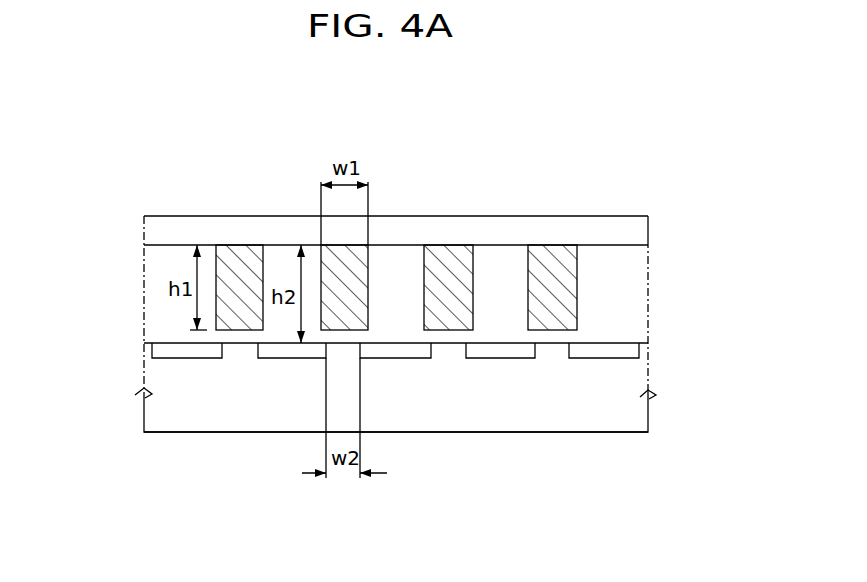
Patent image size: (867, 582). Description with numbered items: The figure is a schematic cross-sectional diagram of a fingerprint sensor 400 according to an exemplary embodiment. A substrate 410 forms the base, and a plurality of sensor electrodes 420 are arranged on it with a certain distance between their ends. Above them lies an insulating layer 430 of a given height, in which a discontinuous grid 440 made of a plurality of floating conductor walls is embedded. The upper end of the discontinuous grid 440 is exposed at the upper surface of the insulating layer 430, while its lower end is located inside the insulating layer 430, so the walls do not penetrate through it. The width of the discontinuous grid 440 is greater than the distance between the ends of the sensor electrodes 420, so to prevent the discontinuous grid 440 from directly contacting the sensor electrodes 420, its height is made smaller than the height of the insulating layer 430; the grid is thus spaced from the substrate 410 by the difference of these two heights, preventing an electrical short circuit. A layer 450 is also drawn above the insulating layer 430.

The fingerprint sensor 400 is at (114, 177).
The substrate 410 is at (637, 400).
The sensor electrodes 420 is at (277, 352).
The insulating layer 430 is at (504, 258).
The discontinuous grid 440 is at (445, 255).
The upper layer 450 is at (638, 234).